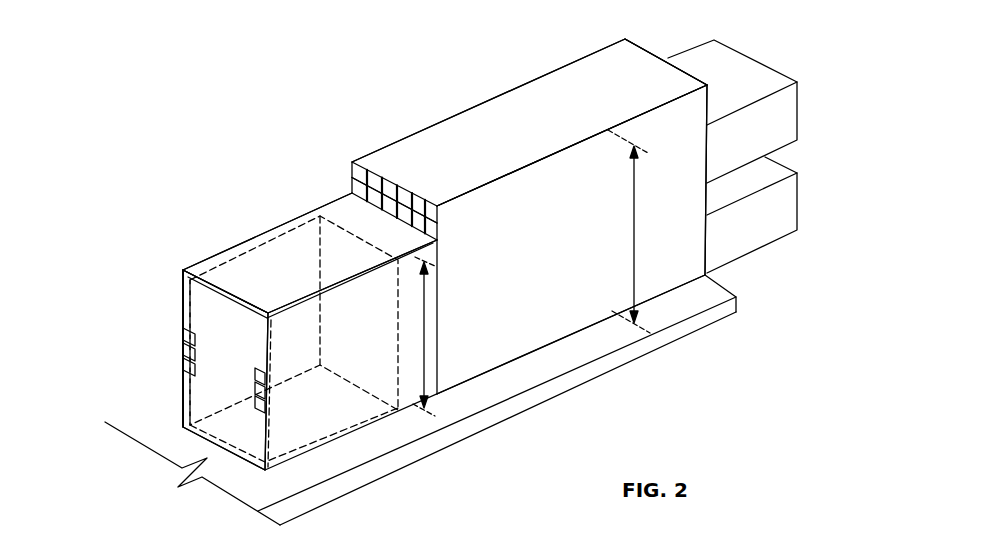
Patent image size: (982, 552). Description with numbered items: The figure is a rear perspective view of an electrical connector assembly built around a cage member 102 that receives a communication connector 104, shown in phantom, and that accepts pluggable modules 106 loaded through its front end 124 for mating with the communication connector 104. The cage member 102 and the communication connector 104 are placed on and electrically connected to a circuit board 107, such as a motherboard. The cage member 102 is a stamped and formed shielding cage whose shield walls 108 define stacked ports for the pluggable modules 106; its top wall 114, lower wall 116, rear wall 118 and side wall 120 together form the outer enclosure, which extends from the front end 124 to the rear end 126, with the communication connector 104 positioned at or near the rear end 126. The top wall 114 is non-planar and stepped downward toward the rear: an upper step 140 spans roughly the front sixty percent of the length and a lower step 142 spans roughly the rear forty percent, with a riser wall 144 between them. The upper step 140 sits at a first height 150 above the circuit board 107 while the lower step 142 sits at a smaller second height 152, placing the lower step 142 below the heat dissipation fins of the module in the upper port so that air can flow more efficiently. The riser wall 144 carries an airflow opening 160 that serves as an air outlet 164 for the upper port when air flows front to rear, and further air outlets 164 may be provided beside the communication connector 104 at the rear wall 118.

The cage member 102 is at (557, 88).
The communication connector 104 is at (218, 258).
The pluggable modules 106 is at (787, 82).
The circuit board 107 is at (693, 303).
The shield walls 108 is at (463, 130).
The top wall 114 is at (335, 208).
The lower wall 116 is at (538, 349).
The rear wall 118 is at (225, 385).
The side wall 120 is at (690, 247).
The front end 124 is at (647, 48).
The rear end 126 is at (182, 283).
The upper step 140 is at (417, 145).
The lower step 142 is at (268, 247).
The riser wall 144 is at (352, 165).
The first height 150 is at (634, 232).
The second height 152 is at (424, 333).
The airflow opening 160 is at (360, 190).
The air outlets 164 is at (403, 213).